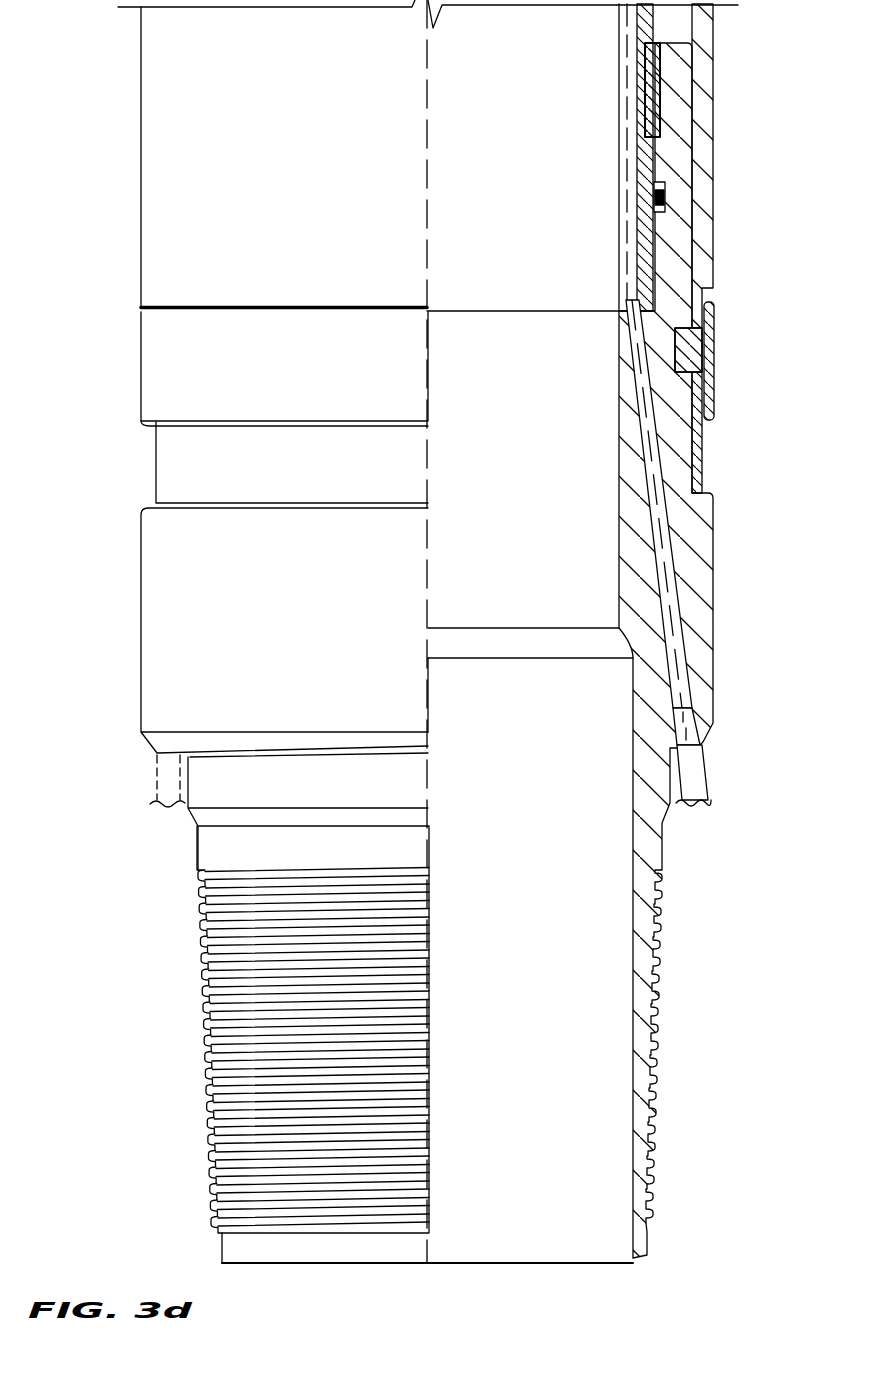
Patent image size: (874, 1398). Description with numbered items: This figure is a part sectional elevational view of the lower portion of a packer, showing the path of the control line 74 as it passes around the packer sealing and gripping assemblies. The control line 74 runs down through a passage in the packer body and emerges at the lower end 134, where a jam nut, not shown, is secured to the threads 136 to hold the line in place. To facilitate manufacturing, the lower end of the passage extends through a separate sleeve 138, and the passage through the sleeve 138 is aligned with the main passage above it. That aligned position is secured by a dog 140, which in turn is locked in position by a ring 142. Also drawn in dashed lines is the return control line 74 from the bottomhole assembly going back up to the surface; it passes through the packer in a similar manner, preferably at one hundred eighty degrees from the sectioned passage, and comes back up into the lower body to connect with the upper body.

The control line 74 is at (702, 780).
The lower end 134 is at (702, 744).
The threads 136 is at (674, 731).
The sleeve 138 is at (716, 538).
The dog 140 is at (716, 334).
The ring 142 is at (714, 397).